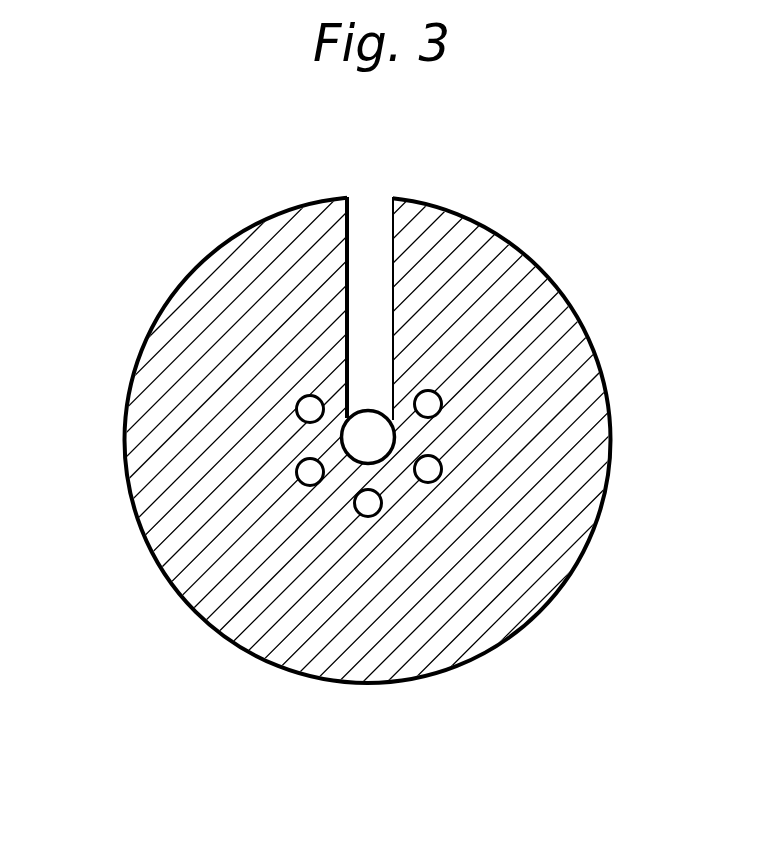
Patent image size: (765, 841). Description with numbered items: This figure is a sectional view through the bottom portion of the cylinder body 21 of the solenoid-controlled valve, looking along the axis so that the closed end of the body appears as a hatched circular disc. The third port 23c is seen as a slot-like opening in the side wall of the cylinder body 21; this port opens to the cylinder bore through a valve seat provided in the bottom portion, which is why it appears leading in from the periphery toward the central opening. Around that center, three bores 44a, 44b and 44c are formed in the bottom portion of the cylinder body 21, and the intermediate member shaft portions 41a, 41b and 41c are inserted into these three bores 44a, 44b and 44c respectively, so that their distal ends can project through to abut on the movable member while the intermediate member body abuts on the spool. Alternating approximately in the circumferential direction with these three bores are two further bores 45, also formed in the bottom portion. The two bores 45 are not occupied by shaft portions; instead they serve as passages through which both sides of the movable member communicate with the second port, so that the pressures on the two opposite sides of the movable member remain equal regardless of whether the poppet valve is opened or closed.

The cylinder body 21 is at (493, 252).
The third port 23c is at (394, 218).
The bore 44a is at (169, 476).
The intermediate member shaft portion 41a is at (305, 410).
The bore 44b is at (281, 627).
The intermediate member shaft portion 41b is at (367, 508).
The bore 44c is at (559, 341).
The intermediate member shaft portion 41c is at (430, 400).
The bores 45 is at (303, 482).